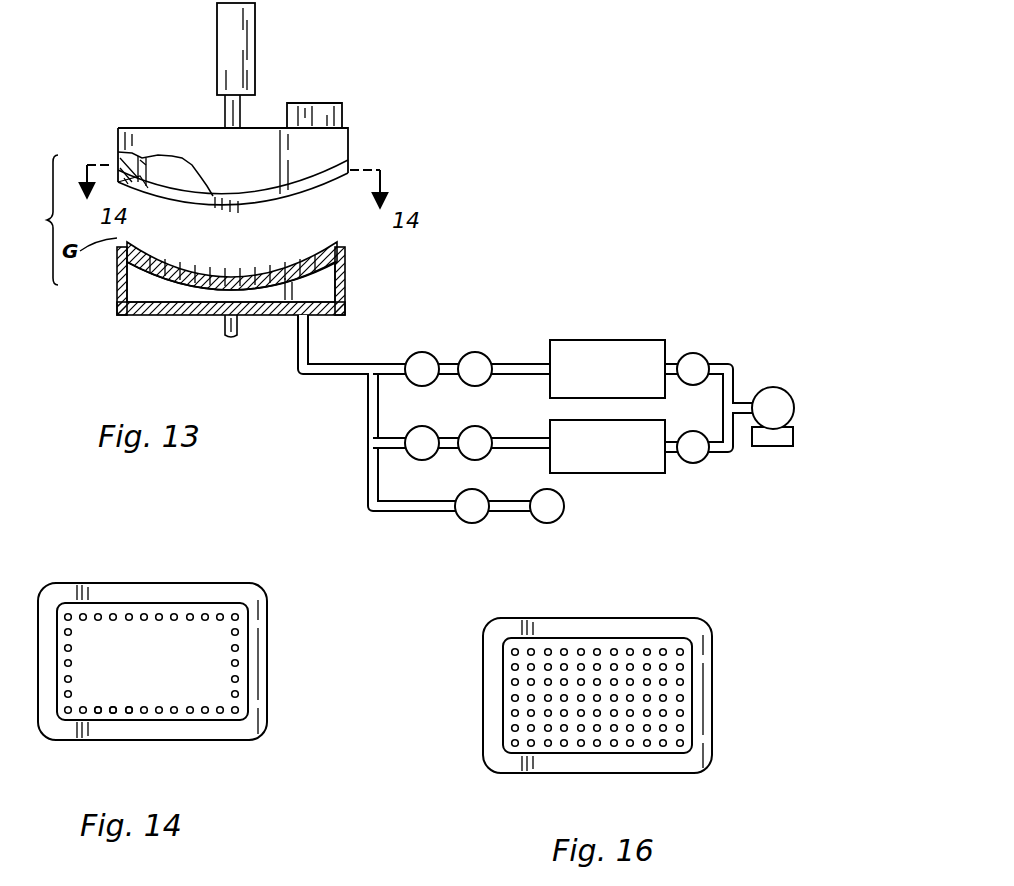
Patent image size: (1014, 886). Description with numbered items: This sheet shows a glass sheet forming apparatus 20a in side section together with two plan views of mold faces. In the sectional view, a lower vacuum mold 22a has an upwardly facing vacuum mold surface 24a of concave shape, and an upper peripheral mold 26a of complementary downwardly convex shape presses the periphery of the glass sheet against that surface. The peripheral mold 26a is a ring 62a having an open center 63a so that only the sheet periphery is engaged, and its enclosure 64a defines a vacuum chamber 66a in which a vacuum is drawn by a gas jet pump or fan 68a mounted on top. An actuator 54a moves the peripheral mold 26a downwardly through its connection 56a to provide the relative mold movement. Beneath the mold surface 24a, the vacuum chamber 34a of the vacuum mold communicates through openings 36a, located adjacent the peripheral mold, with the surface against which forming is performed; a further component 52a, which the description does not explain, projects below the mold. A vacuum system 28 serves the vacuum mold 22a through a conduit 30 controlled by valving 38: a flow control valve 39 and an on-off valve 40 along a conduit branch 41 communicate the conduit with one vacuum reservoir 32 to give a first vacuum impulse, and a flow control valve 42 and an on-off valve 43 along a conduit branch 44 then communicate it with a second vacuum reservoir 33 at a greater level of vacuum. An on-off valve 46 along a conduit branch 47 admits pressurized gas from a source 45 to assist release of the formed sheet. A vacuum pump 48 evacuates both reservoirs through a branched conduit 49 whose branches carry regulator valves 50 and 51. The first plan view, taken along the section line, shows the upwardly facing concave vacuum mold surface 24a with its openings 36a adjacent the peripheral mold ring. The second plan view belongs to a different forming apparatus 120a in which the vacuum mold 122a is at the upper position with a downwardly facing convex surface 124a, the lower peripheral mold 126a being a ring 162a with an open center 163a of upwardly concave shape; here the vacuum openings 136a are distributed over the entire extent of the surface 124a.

In FIG. 13, the glass sheet forming apparatus 20a is at (376, 125).
In FIG. 14, the glass sheet forming apparatus 20a is at (179, 561).
In FIG. 13, the vacuum mold 22a is at (363, 278).
In FIG. 14, the vacuum mold 22a is at (213, 606).
In FIG. 13, the vacuum mold surface 24a is at (270, 263).
In FIG. 14, the vacuum mold surface 24a is at (112, 614).
In FIG. 13, the peripheral mold 26a is at (350, 157).
In FIG. 14, the peripheral mold 26a is at (267, 608).
In FIG. 13, the vacuum system 28 is at (446, 315).
In FIG. 13, the conduit 30 is at (309, 332).
In FIG. 13, the vacuum reservoir 32 is at (605, 341).
In FIG. 13, the vacuum reservoir 33 is at (627, 474).
In FIG. 13, the vacuum chamber 34a is at (150, 290).
In FIG. 13, the openings 36a is at (224, 268).
In FIG. 14, the openings 36a is at (100, 714).
In FIG. 13, the valving 38 is at (414, 334).
In FIG. 13, the flow control valve 39 is at (430, 352).
In FIG. 13, the on-off valve 40 is at (487, 350).
In FIG. 13, the conduit branch 41 is at (520, 362).
In FIG. 13, the flow control valve 42 is at (407, 425).
In FIG. 13, the on-off valve 43 is at (463, 425).
In FIG. 13, the conduit branch 44 is at (517, 436).
In FIG. 13, the pressurized gas source 45 is at (558, 527).
In FIG. 13, the on-off valve 46 is at (492, 523).
In FIG. 13, the conduit branch 47 is at (398, 512).
In FIG. 13, the vacuum pump 48 is at (795, 402).
In FIG. 13, the branched conduit 49 is at (737, 387).
In FIG. 13, the regulator valve 50 is at (702, 357).
In FIG. 13, the regulator valve 51 is at (698, 464).
In FIG. 13, the drain conduit 52a is at (237, 334).
In FIG. 13, the actuator 54a is at (255, 43).
In FIG. 13, the connection 56a is at (242, 115).
In FIG. 14, the ring 62a is at (260, 655).
In FIG. 14, the open center 63a is at (240, 713).
In FIG. 13, the enclosure 64a is at (217, 148).
In FIG. 13, the vacuum chamber 66a is at (172, 172).
In FIG. 13, the gas jet pump or fan 68a is at (320, 110).
In FIG. 16, the forming apparatus 120a is at (634, 605).
In FIG. 16, the vacuum mold 122a is at (656, 644).
In FIG. 16, the vacuum mold surface 124a is at (555, 648).
In FIG. 16, the peripheral mold 126a is at (712, 643).
In FIG. 16, the vacuum openings 136a is at (548, 746).
In FIG. 16, the ring 162a is at (703, 688).
In FIG. 16, the open center 163a is at (685, 744).